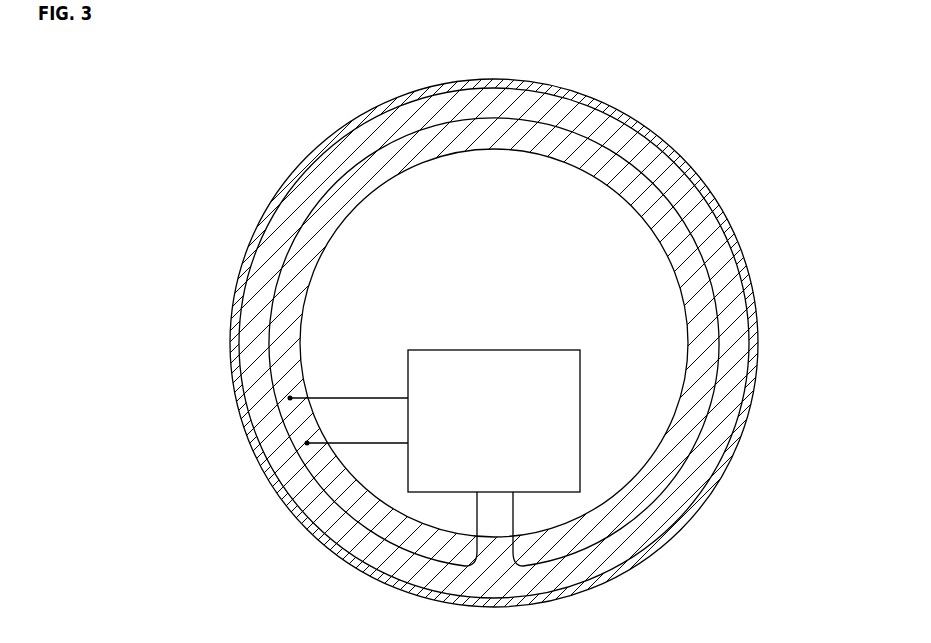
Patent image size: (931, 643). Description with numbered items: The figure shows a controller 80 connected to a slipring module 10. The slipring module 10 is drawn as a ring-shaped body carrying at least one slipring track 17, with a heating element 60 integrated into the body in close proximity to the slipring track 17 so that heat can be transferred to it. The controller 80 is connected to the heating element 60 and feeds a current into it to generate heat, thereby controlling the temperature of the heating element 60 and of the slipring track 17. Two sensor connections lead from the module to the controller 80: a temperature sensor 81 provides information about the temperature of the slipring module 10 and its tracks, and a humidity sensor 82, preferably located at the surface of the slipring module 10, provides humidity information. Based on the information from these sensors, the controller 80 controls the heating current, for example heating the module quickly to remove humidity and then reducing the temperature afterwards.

The slipring module 10 is at (535, 343).
The slipring track 17 is at (758, 343).
The heating element 60 is at (690, 342).
The controller 80 is at (493, 372).
The temperature sensor 81 is at (300, 445).
The humidity sensor 82 is at (290, 398).